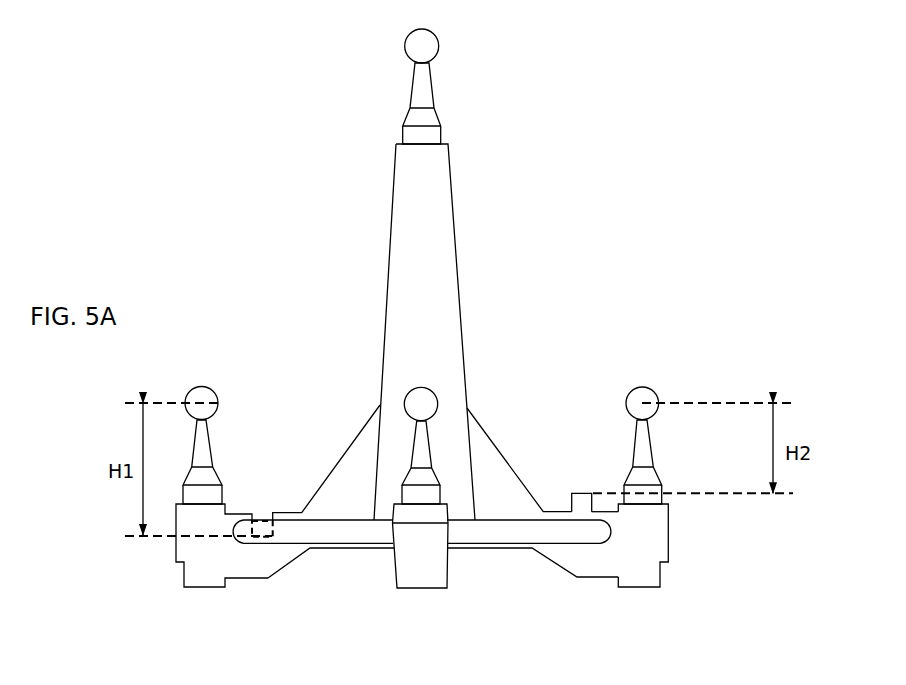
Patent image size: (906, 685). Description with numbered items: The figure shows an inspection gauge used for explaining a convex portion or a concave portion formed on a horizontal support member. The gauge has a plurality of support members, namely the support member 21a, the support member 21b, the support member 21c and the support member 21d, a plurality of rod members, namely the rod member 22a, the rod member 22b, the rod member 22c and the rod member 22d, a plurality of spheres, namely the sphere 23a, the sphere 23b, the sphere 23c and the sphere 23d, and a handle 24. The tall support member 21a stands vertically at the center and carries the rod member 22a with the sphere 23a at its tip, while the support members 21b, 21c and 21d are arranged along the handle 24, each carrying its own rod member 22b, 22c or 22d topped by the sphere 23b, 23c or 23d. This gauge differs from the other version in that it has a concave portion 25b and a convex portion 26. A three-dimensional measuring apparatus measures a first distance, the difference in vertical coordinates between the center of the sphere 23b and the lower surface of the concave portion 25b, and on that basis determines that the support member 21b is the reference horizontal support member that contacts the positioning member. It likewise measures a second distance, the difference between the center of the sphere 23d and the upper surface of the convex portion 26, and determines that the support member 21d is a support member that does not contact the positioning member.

The support member 21a is at (457, 268).
The rod member 22a is at (433, 100).
The sphere 23a is at (440, 44).
The support member 21b is at (178, 545).
The rod member 22b is at (212, 442).
The sphere 23b is at (218, 402).
The support member 21c is at (450, 570).
The rod member 22c is at (432, 438).
The sphere 23c is at (437, 400).
The support member 21d is at (667, 537).
The rod member 22d is at (652, 442).
The sphere 23d is at (653, 395).
The handle 24 is at (363, 545).
The concave portion 25b is at (257, 538).
The convex portion 26 is at (580, 492).